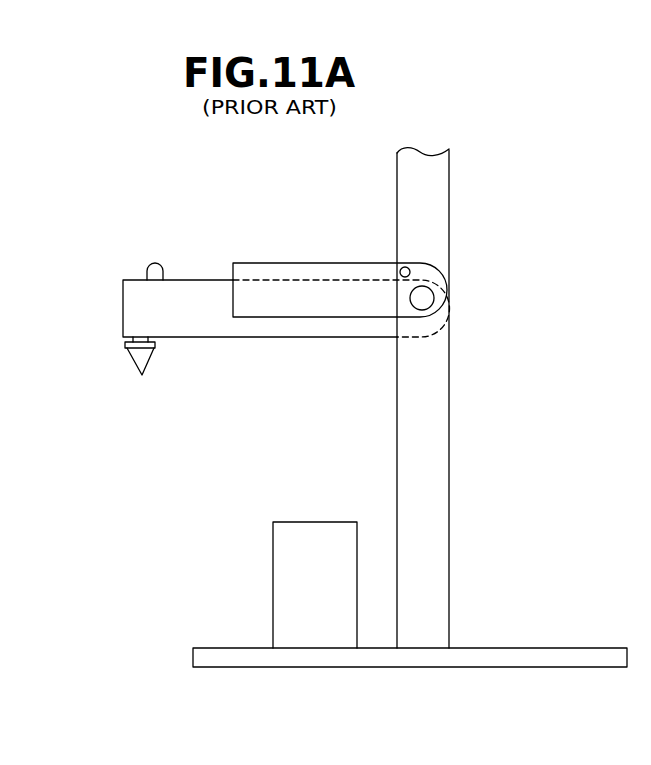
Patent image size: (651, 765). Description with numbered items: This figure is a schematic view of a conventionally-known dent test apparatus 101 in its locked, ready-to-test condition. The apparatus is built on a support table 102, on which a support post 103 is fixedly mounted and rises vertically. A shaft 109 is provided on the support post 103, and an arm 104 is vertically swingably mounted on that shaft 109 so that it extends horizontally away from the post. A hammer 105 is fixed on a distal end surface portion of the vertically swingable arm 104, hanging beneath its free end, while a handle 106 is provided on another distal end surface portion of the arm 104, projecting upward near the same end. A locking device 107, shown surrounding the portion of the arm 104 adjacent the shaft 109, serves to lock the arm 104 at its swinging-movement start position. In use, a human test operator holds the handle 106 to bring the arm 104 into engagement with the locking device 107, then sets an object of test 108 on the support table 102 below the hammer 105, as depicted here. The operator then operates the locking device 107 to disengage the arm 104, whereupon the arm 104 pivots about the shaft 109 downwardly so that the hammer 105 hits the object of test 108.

The dent test apparatus 101 is at (484, 135).
The support table 102 is at (527, 647).
The support post 103 is at (433, 452).
The arm 104 is at (142, 313).
The hammer 105 is at (140, 358).
The handle 106 is at (150, 263).
The locking device 107 is at (260, 270).
The object of test 108 is at (287, 585).
The shaft 109 is at (425, 297).